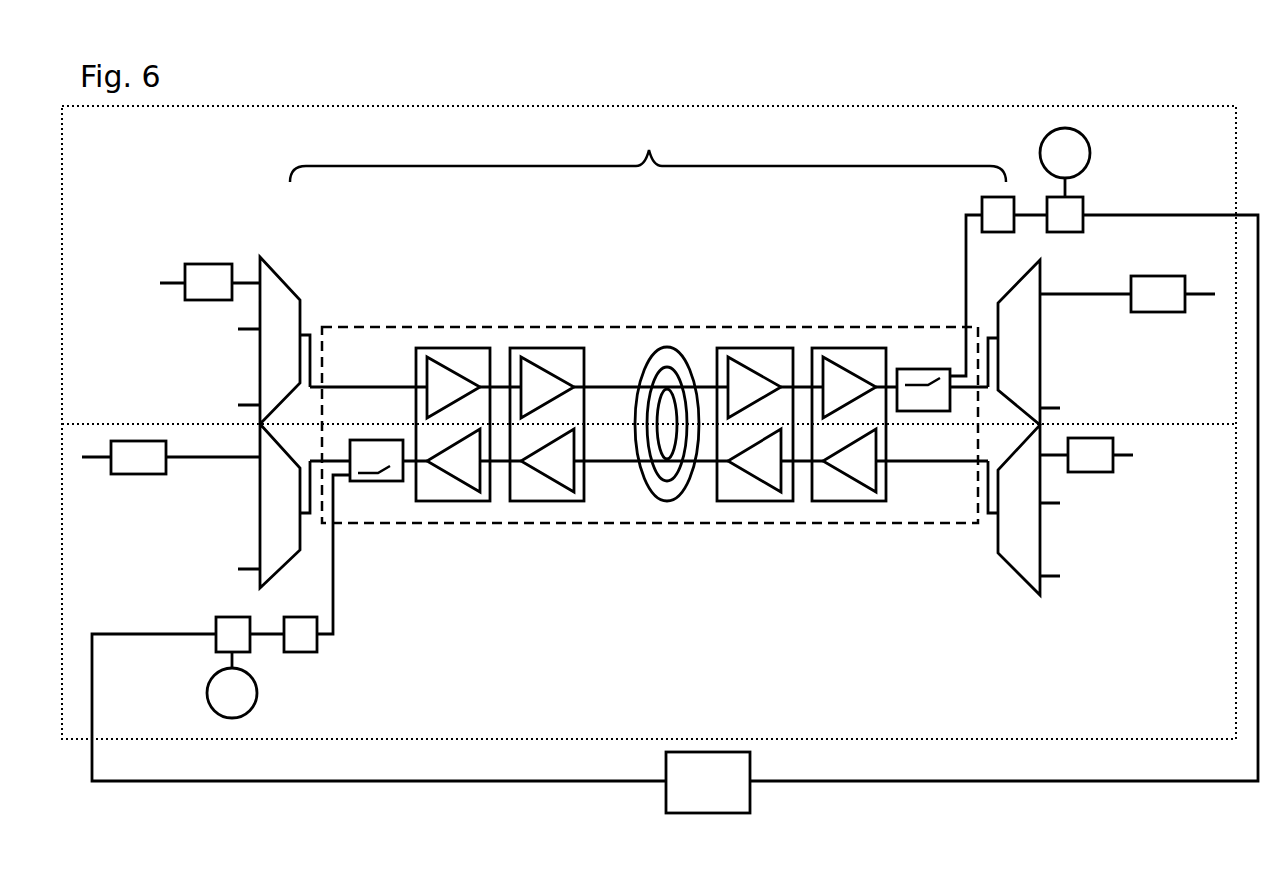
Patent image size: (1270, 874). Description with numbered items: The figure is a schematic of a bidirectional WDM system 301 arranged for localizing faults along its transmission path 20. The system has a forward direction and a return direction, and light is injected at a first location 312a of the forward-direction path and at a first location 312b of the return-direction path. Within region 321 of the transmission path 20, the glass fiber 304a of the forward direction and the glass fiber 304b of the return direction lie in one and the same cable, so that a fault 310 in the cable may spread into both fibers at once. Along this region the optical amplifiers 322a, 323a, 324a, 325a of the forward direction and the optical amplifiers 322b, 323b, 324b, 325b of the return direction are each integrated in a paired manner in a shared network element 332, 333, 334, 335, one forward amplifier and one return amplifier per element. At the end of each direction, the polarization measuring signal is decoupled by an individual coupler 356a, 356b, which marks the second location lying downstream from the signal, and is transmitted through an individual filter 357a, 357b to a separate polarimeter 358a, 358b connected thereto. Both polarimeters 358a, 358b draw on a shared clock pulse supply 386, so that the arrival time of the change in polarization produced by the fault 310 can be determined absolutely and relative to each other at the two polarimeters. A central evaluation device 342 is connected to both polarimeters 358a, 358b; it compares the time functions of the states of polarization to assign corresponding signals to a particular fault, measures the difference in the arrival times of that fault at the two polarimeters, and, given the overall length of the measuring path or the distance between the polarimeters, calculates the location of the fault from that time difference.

The bidirectional WDM system 301 is at (953, 106).
The transmission path 20 is at (648, 154).
The first location of the forward-direction transmission path 312a is at (200, 328).
The first location of the return-direction transmission path 312b is at (1160, 496).
The region of transmission path 321 is at (635, 327).
The glass fiber of the forward direction 304a is at (350, 386).
The glass fiber of the return direction 304b is at (612, 465).
The shared network element 332 is at (465, 397).
The shared network element 333 is at (566, 392).
The fault 310 is at (672, 348).
The shared network element 334 is at (761, 391).
The shared network element 335 is at (856, 393).
The optical amplifier of the forward direction 322a is at (453, 387).
The optical amplifier of the return direction 322b is at (453, 460).
The optical amplifier of the forward direction 323a is at (547, 387).
The optical amplifier of the return direction 323b is at (547, 460).
The optical amplifier of the forward direction 324a is at (754, 387).
The optical amplifier of the return direction 324b is at (754, 460).
The optical amplifier of the forward direction 325a is at (849, 387).
The optical amplifier of the return direction 325b is at (849, 460).
The coupler 356a is at (923, 390).
The coupler 356b is at (376, 460).
The filter 357a is at (994, 206).
The filter 357b is at (301, 626).
The polarimeter 358a is at (1098, 246).
The polarimeter 358b is at (228, 626).
The shared clock pulse supply 386 is at (1125, 154).
The central evaluation device 342 is at (728, 793).